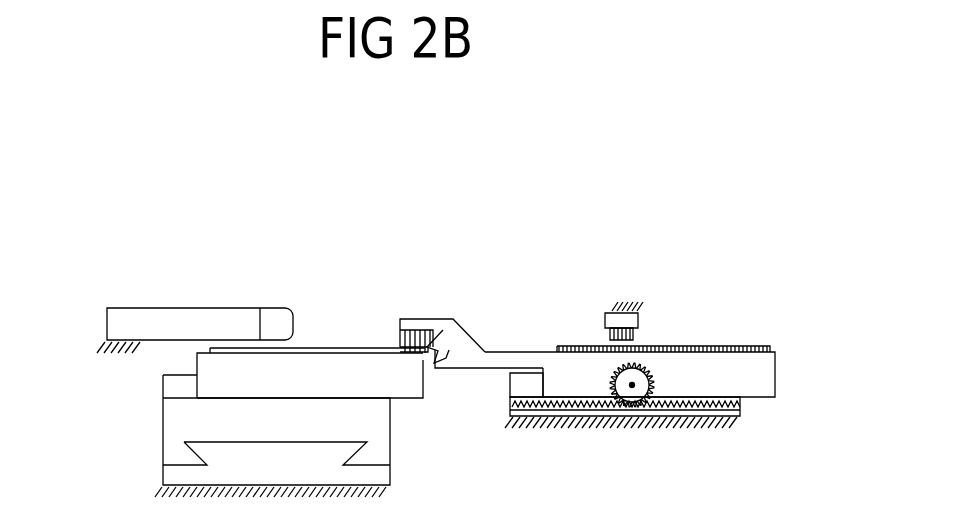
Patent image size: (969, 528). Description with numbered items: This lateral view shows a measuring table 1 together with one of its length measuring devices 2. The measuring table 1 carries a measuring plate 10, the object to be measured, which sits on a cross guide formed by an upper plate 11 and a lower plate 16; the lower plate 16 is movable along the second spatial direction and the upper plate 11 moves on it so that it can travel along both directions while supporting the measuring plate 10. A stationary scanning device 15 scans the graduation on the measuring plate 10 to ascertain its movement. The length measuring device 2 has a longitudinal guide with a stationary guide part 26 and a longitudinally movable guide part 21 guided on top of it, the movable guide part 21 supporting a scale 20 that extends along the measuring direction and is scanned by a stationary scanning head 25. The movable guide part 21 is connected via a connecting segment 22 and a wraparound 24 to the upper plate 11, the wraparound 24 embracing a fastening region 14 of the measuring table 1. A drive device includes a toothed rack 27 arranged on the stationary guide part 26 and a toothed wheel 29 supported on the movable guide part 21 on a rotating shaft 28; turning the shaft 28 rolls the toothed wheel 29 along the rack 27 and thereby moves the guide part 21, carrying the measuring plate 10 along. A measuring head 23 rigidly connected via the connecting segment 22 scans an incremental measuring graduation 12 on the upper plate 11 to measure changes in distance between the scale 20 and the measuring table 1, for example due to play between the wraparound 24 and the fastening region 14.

The measuring table 1 is at (175, 362).
The length measuring device 2 is at (695, 322).
The measuring plate 10 is at (312, 345).
The upper plate 11 is at (407, 387).
The incremental measuring graduation 12 is at (400, 345).
The fastening region 14 is at (460, 337).
The scanning device 15 is at (273, 322).
The lower plate 16 is at (378, 447).
The scale 20 is at (763, 345).
The longitudinally movable guide part 21 is at (757, 378).
The connecting segment 22 is at (515, 358).
The measuring head 23 is at (415, 333).
The wraparound 24 is at (442, 330).
The scanning head 25 is at (627, 330).
The stationary guide part 26 is at (525, 387).
The toothed rack 27 is at (740, 405).
The rotating shaft 28 is at (632, 387).
The toothed wheel 29 is at (663, 390).